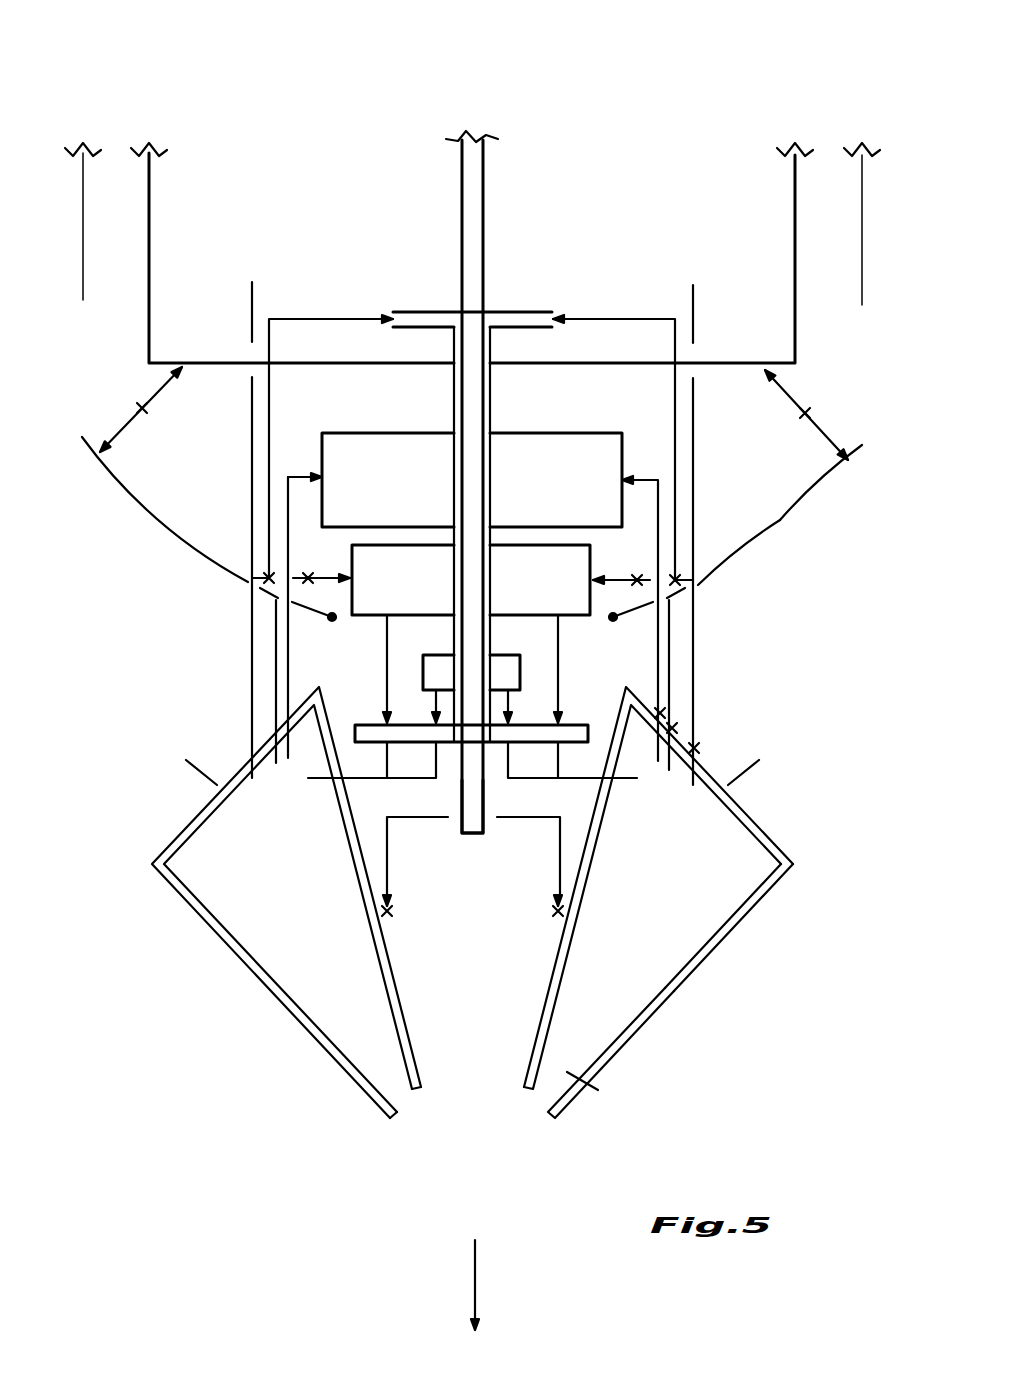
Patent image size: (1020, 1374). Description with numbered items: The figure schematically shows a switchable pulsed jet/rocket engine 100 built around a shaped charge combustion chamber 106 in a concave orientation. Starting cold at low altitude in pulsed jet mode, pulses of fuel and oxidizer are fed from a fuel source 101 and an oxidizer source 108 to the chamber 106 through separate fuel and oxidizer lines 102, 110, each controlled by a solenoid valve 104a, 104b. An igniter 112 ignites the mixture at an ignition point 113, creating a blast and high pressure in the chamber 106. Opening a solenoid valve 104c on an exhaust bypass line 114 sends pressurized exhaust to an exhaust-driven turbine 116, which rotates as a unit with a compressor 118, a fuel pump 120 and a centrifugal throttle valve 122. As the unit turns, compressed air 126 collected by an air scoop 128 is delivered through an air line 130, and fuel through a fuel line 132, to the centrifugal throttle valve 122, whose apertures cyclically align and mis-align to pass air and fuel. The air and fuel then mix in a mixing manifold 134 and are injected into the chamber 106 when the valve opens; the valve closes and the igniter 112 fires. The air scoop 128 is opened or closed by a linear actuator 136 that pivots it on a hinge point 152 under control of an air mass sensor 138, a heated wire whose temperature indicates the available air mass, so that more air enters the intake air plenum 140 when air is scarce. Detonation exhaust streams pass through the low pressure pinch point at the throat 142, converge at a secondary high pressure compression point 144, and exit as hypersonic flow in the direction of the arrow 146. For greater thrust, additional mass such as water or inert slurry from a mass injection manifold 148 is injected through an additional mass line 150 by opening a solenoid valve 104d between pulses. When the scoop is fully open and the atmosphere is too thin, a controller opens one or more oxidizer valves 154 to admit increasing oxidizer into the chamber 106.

The switchable pulsed jet/rocket engine 100 is at (277, 70).
The fuel source 101 is at (504, 312).
The fuel line 102 is at (598, 319).
The solenoid valve 104a is at (664, 713).
The solenoid valve 104b is at (676, 728).
The solenoid valve 104c is at (698, 748).
The solenoid valve 104d is at (556, 912).
The shaped charge combustion chamber 106 is at (699, 910).
The oxidizer source 108 is at (698, 262).
The oxidizer line 110 is at (693, 316).
The igniter 112 is at (740, 788).
The ignition point 113 is at (717, 835).
The exhaust bypass line 114 is at (652, 536).
The exhaust-driven turbine 116 is at (582, 495).
The compressor 118 is at (531, 590).
The fuel pump 120 is at (560, 644).
The centrifugal throttle valve 122 is at (530, 780).
The compressed air 126 is at (842, 398).
The air scoop 128 is at (817, 553).
The air line 130 is at (522, 670).
The fuel line 132 is at (512, 700).
The mixing manifold 134 is at (575, 778).
The linear actuator 136 is at (801, 413).
The air mass sensor 138 is at (745, 478).
The intake air plenum 140 is at (800, 452).
The throat 142 is at (598, 1090).
The secondary high pressure compression point 144 is at (477, 1210).
The arrow 146 is at (476, 1277).
The mass injection manifold 148 is at (466, 822).
The additional mass line 150 is at (500, 832).
The hinge point 152 is at (613, 619).
The oxidizer valve 154 is at (695, 620).